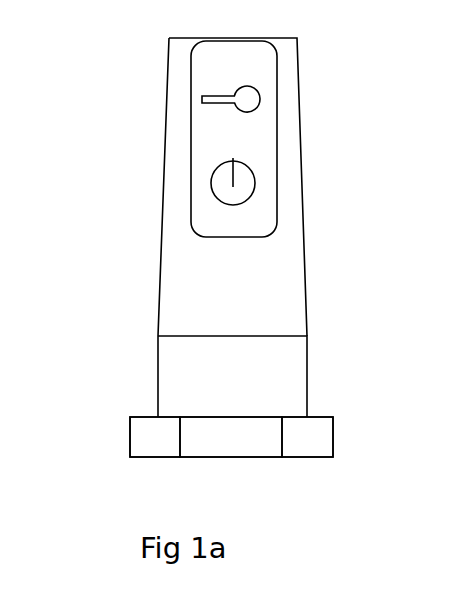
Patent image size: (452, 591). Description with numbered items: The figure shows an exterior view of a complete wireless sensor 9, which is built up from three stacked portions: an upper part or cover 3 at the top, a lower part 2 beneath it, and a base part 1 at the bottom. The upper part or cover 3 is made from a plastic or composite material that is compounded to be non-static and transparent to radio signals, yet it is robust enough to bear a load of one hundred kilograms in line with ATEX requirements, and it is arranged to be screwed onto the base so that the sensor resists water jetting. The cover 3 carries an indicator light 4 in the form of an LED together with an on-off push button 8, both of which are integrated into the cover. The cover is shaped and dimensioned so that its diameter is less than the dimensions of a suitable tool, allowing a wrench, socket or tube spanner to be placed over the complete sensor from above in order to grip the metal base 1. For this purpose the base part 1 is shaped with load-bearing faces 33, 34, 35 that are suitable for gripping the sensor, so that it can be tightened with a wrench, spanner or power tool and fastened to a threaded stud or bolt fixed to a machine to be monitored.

The wireless sensor 9 is at (237, 259).
The base part 1 is at (194, 458).
The lower part 2 is at (165, 365).
The upper part or cover 3 is at (238, 175).
The indicator light 4 is at (267, 99).
The on-off push button 8 is at (253, 173).
The load-bearing face 33 is at (160, 447).
The load-bearing face 34 is at (215, 447).
The load-bearing face 35 is at (315, 447).